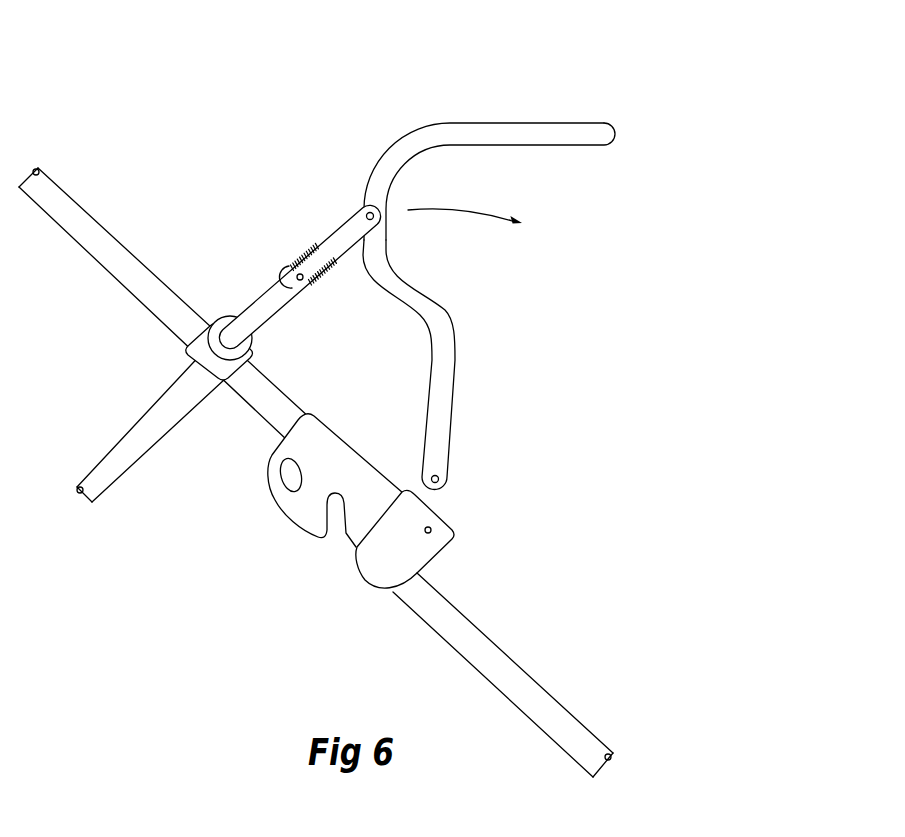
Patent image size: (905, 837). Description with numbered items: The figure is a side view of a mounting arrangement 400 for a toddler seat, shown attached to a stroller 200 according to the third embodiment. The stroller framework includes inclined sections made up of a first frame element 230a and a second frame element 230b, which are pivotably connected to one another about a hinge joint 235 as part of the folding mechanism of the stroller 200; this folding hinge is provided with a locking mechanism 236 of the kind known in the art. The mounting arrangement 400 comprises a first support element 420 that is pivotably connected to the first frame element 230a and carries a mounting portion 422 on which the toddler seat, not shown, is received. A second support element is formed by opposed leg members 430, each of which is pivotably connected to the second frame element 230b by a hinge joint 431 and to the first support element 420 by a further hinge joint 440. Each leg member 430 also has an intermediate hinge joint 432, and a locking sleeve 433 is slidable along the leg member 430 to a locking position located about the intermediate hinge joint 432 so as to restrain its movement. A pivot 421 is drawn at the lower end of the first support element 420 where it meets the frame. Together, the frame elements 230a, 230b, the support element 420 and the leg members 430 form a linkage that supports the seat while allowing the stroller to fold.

The stroller 200 is at (105, 203).
The first frame element 230a is at (565, 730).
The second frame element 230b is at (123, 265).
The hinge joint 235 is at (380, 566).
The locking mechanism 236 is at (310, 527).
The mounting arrangement 400 is at (477, 97).
The first support element 420 is at (448, 400).
The handle pivot 421 is at (440, 478).
The mounting portion 422 is at (538, 135).
The leg member 430 is at (259, 314).
The hinge joint 431 is at (226, 338).
The intermediate hinge joint 432 is at (312, 287).
The locking sleeve 433 is at (318, 244).
The hinge joint 440 is at (361, 207).